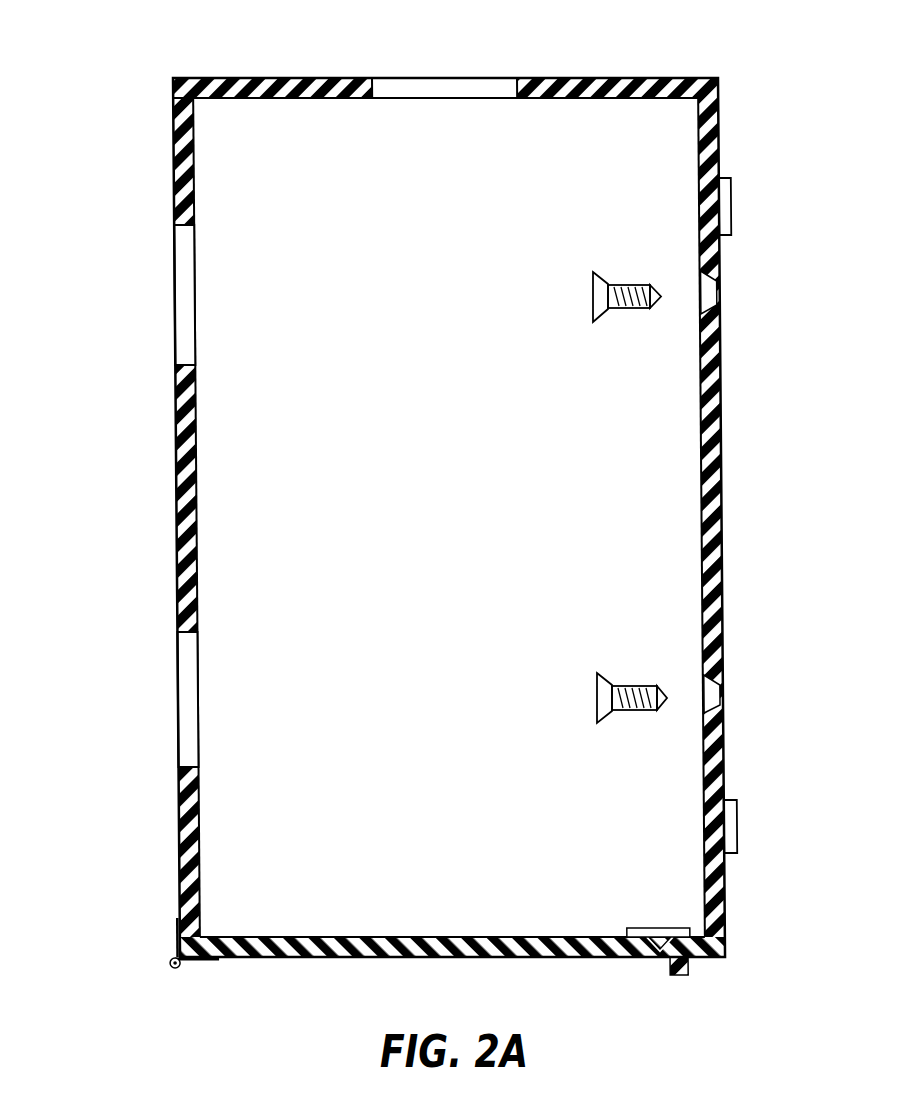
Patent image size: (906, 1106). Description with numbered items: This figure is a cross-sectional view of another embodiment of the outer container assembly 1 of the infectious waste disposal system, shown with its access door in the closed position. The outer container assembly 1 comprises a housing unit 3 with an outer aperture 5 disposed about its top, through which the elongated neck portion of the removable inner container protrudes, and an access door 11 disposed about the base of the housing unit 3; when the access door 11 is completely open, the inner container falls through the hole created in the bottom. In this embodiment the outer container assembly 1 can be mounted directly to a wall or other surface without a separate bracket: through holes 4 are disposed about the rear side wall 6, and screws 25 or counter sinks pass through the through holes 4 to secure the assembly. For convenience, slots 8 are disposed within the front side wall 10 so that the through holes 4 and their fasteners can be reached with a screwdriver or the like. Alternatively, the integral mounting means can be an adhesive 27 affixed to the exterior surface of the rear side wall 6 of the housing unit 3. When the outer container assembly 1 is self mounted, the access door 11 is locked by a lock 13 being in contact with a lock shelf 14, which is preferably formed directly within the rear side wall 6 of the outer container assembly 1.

The outer container assembly 1 is at (168, 465).
The housing unit 3 is at (431, 580).
The through holes 4 is at (722, 299).
The outer aperture 5 is at (433, 82).
The rear side wall 6 is at (723, 502).
The slots 8 is at (176, 294).
The front side wall 10 is at (178, 556).
The access door 11 is at (388, 958).
The lock 13 is at (657, 928).
The lock shelf 14 is at (670, 966).
The screws 25 is at (593, 297).
The adhesive 27 is at (731, 205).